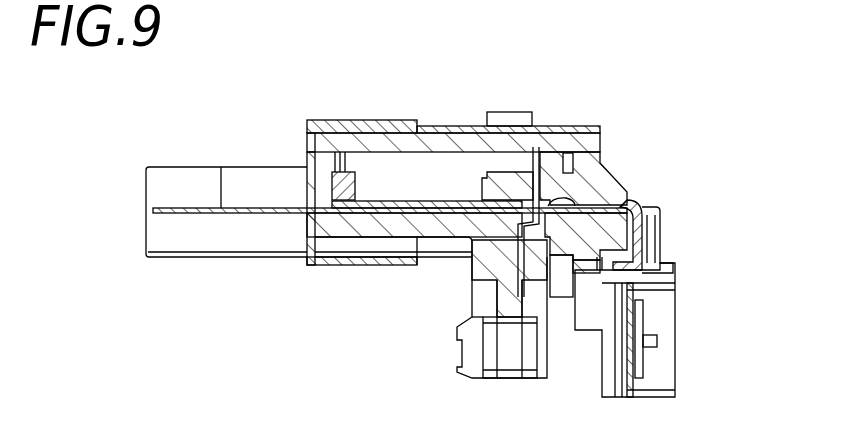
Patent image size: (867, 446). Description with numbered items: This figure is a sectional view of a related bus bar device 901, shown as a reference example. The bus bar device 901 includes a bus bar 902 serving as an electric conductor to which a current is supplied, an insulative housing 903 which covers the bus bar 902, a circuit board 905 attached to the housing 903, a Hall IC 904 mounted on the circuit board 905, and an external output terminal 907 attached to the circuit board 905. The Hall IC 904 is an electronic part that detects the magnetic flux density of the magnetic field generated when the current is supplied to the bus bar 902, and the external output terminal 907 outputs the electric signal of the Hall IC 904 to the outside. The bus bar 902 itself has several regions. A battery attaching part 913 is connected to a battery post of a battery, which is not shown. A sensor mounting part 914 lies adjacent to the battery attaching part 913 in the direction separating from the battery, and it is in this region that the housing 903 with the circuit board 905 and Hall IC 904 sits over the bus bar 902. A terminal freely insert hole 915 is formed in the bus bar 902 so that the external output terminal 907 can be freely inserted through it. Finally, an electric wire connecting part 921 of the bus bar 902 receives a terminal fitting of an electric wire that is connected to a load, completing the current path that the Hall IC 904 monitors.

The bus bar device 901 is at (628, 127).
The bus bar 902 is at (155, 212).
The insulative housing 903 is at (620, 198).
The Hall IC 904 is at (333, 185).
The circuit board 905 is at (318, 146).
The external output terminal 907 is at (579, 137).
The battery attaching part 913 is at (243, 180).
The sensor mounting part 914 is at (372, 203).
The terminal freely insert hole 915 is at (583, 198).
The electric wire connecting part 921 is at (644, 316).